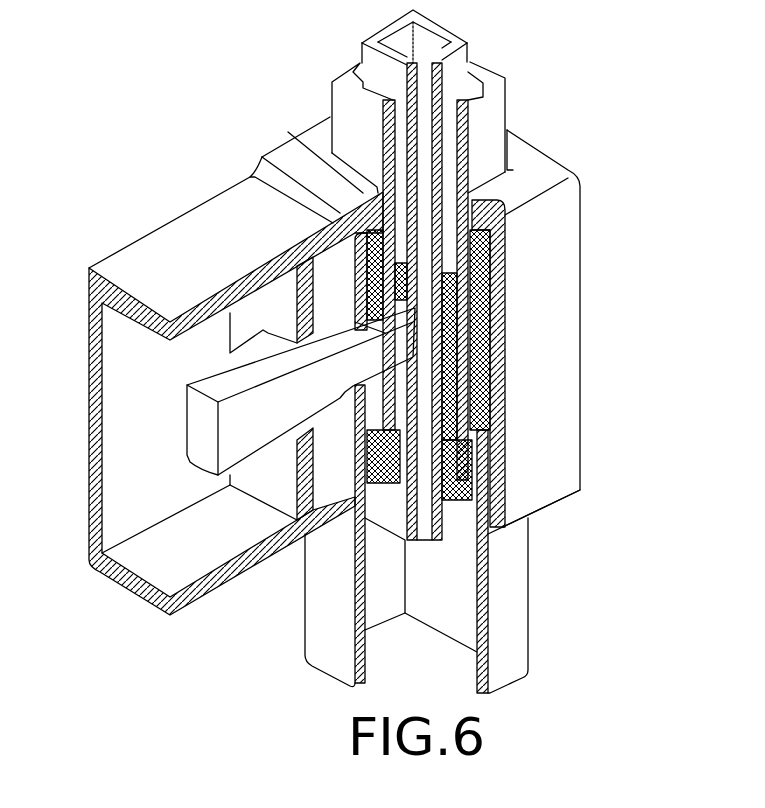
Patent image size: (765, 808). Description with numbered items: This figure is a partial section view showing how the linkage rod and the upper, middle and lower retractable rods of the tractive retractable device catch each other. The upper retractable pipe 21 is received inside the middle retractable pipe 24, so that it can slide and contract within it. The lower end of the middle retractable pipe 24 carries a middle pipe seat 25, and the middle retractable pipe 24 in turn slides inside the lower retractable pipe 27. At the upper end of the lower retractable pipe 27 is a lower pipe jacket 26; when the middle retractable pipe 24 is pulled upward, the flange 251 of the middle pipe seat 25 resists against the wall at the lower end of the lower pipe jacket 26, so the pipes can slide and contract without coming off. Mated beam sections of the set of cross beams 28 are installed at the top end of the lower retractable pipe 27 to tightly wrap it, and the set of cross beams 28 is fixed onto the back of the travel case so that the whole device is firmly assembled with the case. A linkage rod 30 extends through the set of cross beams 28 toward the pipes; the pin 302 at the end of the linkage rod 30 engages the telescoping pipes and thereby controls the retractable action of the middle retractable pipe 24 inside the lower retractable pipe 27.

The upper retractable pipe 21 is at (462, 44).
The middle retractable pipe 24 is at (503, 110).
The middle pipe seat 25 is at (470, 387).
The flange of middle pipe seat 251 is at (387, 495).
The lower pipe jacket 26 is at (290, 133).
The lower retractable pipe 27 is at (523, 563).
The set of cross beams 28 is at (173, 237).
The linkage rod 30 is at (187, 426).
The pin 302 is at (355, 290).